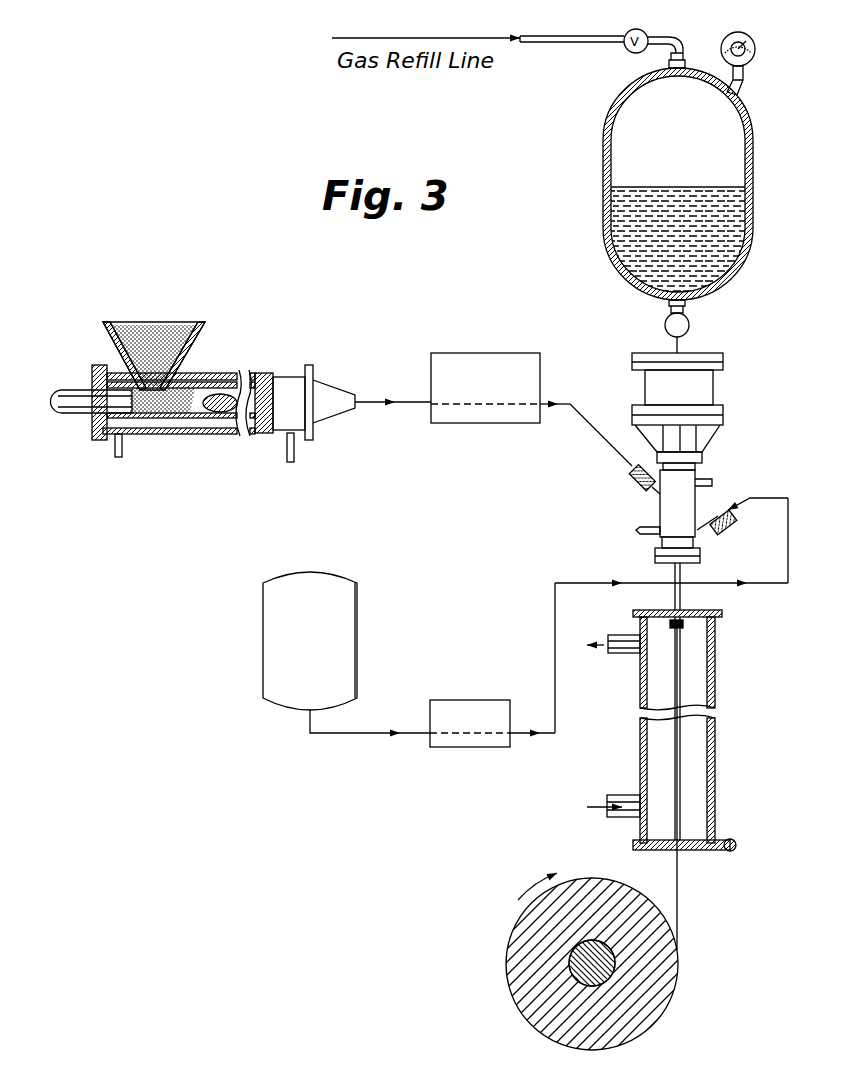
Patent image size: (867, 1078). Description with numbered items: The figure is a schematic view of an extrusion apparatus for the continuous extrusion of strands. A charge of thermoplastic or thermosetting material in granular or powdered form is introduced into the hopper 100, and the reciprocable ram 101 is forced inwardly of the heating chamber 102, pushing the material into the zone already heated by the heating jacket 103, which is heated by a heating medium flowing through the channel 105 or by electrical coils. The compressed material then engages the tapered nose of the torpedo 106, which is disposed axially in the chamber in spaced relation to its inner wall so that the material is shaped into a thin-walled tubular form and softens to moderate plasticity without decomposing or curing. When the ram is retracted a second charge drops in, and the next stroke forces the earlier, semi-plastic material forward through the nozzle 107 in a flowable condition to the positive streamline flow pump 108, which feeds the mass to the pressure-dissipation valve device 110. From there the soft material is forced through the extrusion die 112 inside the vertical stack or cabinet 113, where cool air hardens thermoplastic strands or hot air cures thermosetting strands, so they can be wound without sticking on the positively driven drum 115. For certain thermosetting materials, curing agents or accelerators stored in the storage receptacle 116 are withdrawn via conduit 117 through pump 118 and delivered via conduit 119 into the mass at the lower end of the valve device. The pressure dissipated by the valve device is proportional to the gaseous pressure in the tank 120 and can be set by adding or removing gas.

The hopper 100 is at (162, 333).
The reciprocable ram 101 is at (73, 400).
The heating chamber 102 is at (200, 397).
The heating jacket 103 is at (168, 430).
The channel 105 is at (205, 423).
The torpedo 106 is at (248, 423).
The nozzle 107 is at (332, 403).
The positive streamline flow pump 108 is at (495, 370).
The pressure-dissipation valve device 110 is at (680, 508).
The extrusion die 112 is at (685, 627).
The vertical stack or cabinet 113 is at (712, 687).
The positively driven drum 115 is at (525, 955).
The storage receptacle 116 is at (347, 622).
The conduit 117 is at (370, 735).
The pump 118 is at (475, 708).
The conduit 119 is at (577, 583).
The tank 120 is at (603, 200).